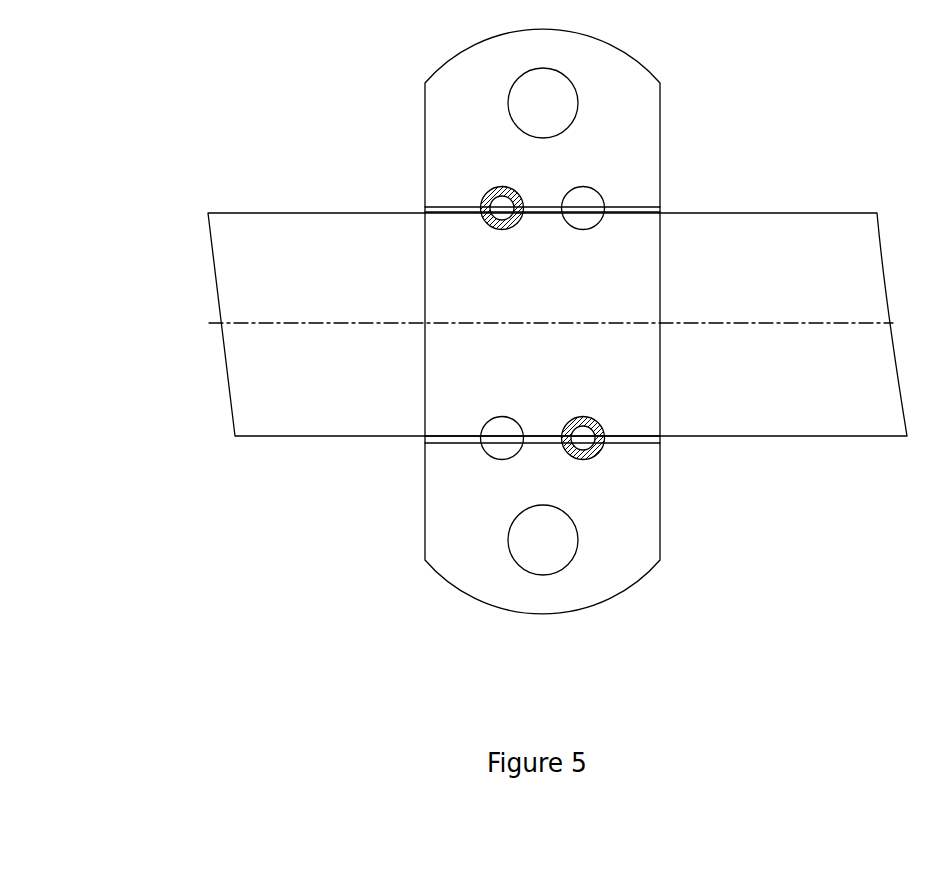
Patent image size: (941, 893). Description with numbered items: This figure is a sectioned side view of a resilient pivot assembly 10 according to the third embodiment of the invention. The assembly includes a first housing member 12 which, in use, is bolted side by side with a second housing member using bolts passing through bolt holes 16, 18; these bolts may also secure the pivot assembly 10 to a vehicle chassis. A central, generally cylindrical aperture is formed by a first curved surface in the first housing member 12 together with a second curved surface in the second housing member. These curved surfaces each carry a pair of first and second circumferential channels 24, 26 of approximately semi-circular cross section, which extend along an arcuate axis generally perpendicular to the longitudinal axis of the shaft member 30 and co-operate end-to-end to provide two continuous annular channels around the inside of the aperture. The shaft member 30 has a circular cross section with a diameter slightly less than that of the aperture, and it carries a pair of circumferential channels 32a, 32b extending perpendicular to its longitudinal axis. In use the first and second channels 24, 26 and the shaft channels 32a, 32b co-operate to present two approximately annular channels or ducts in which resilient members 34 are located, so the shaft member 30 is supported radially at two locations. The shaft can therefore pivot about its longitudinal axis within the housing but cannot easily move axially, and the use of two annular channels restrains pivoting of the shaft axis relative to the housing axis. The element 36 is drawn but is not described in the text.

The resilient pivot assembly 10 is at (305, 105).
The first housing member 12 is at (630, 529).
The bolt hole 16 is at (543, 103).
The bolt hole 18 is at (543, 540).
The first circumferential channel 24 is at (491, 191).
The second circumferential channel 26 is at (598, 190).
The shaft member 30 is at (553, 324).
The circumferential channel 32a is at (503, 230).
The circumferential channel 32b is at (586, 230).
The resilient member 34 is at (500, 418).
The second fastener 36 is at (594, 419).